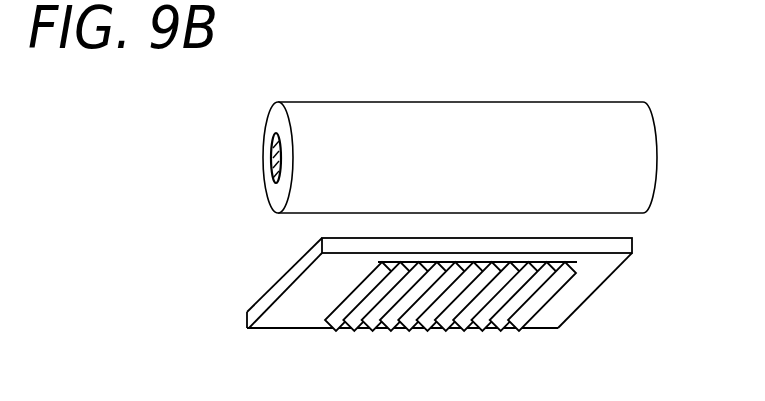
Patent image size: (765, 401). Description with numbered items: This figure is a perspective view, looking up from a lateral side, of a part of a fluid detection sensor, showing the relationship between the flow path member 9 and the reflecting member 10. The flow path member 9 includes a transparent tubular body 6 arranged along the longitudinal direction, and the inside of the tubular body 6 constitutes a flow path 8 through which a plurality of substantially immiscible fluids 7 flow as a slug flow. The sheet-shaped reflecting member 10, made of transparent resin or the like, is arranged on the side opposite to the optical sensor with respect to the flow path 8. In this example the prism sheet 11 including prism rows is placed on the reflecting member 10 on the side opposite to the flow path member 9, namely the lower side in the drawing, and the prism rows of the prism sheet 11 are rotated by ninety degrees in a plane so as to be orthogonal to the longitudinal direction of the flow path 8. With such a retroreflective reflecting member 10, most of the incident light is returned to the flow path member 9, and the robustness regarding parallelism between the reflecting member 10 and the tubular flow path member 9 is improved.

The tubular body 6 is at (277, 115).
The fluids 7 is at (274, 157).
The flow path 8 is at (274, 140).
The flow path member 9 is at (444, 117).
The reflecting member 10 is at (615, 248).
The prism sheet 11 is at (520, 313).